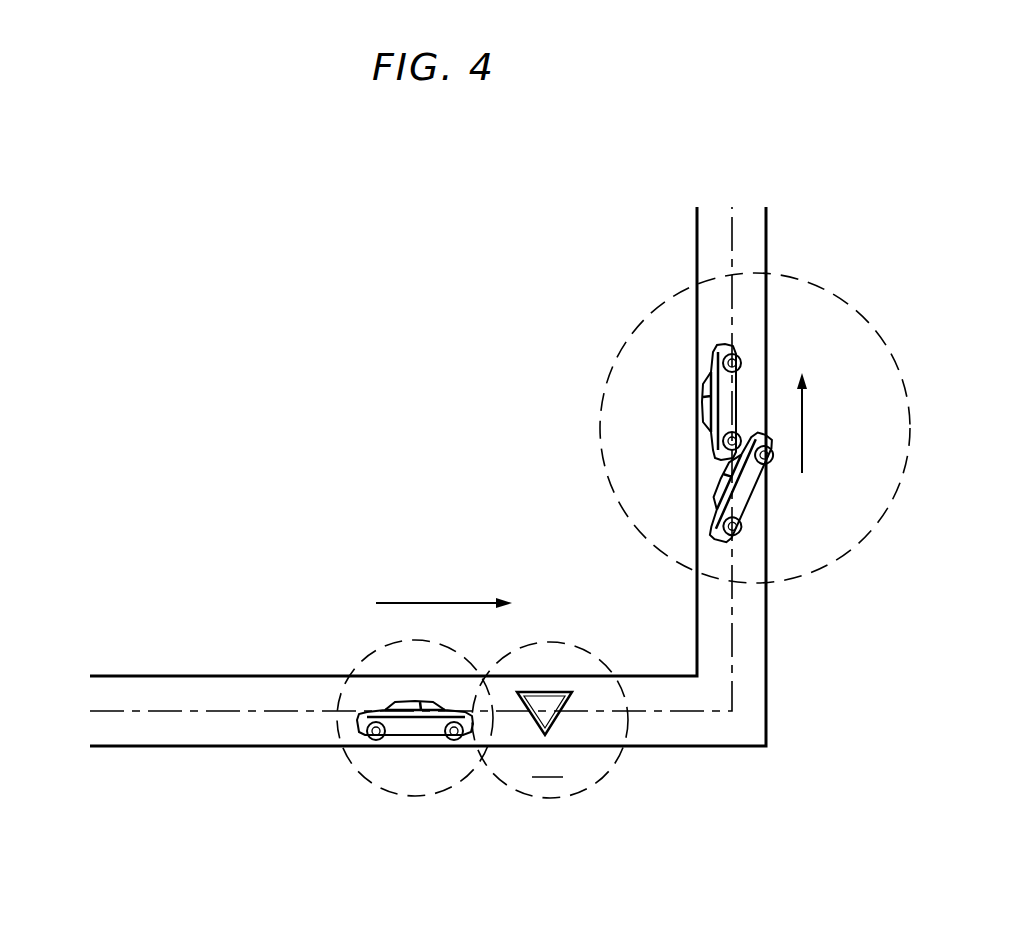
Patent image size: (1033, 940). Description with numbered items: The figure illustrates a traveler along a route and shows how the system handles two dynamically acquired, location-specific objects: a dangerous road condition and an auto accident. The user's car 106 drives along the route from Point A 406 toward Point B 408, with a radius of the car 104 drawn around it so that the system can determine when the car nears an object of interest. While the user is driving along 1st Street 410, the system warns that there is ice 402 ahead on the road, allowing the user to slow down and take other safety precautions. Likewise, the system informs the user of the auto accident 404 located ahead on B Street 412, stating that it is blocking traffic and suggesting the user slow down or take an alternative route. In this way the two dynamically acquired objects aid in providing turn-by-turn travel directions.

The radius of the car 104 is at (360, 772).
The car 106 is at (385, 702).
The ice 402 is at (557, 690).
The auto accident 404 is at (705, 385).
The Point A 406 is at (57, 672).
The Point B 408 is at (733, 148).
The 1st Street 410 is at (436, 555).
The B Street 412 is at (838, 367).